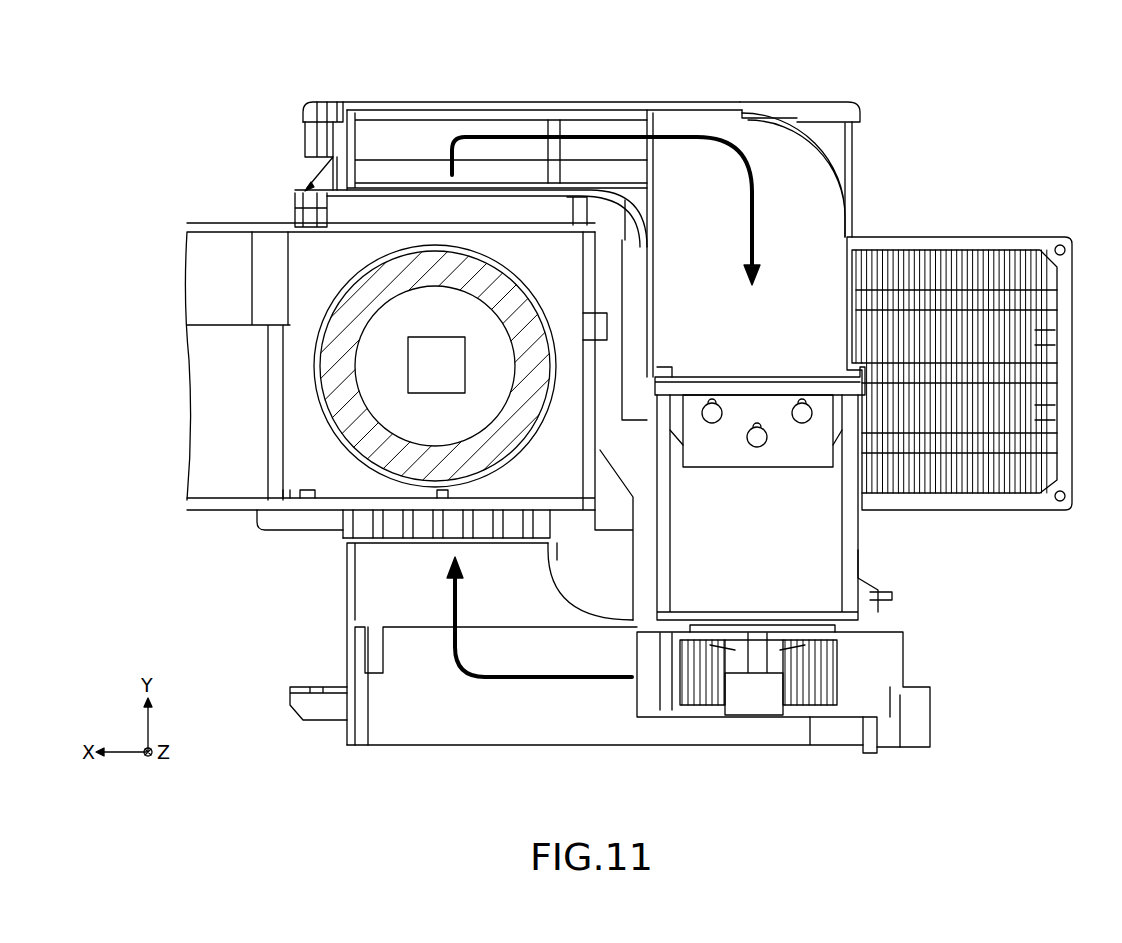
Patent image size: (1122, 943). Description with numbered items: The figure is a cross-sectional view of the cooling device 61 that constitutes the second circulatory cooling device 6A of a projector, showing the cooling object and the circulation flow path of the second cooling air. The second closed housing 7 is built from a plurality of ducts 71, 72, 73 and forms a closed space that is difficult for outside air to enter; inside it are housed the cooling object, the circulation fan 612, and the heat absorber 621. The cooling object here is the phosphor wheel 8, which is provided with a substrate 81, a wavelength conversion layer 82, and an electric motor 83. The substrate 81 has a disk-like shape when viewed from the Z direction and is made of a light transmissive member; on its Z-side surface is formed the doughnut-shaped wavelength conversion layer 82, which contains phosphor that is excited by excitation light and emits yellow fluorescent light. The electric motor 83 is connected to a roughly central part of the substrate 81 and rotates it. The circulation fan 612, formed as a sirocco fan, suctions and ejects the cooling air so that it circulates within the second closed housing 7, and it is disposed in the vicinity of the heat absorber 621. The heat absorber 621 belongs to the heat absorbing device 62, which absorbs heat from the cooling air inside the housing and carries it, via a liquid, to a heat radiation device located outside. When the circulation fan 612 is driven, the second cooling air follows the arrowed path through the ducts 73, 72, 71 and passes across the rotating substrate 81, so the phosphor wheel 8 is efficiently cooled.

The second circulatory cooling device 6A is at (1047, 93).
The cooling device 61 is at (855, 93).
The second closed housing 7 is at (562, 419).
The duct 73 is at (693, 100).
The duct 72 is at (350, 582).
The duct 71 is at (588, 735).
The phosphor wheel 8 is at (320, 458).
The substrate 81 is at (510, 457).
The wavelength conversion layer 82 is at (490, 430).
The electric motor 83 is at (452, 366).
The heat absorbing device 62 is at (773, 477).
The heat absorber 621 is at (750, 405).
The circulation fan 612 is at (757, 642).